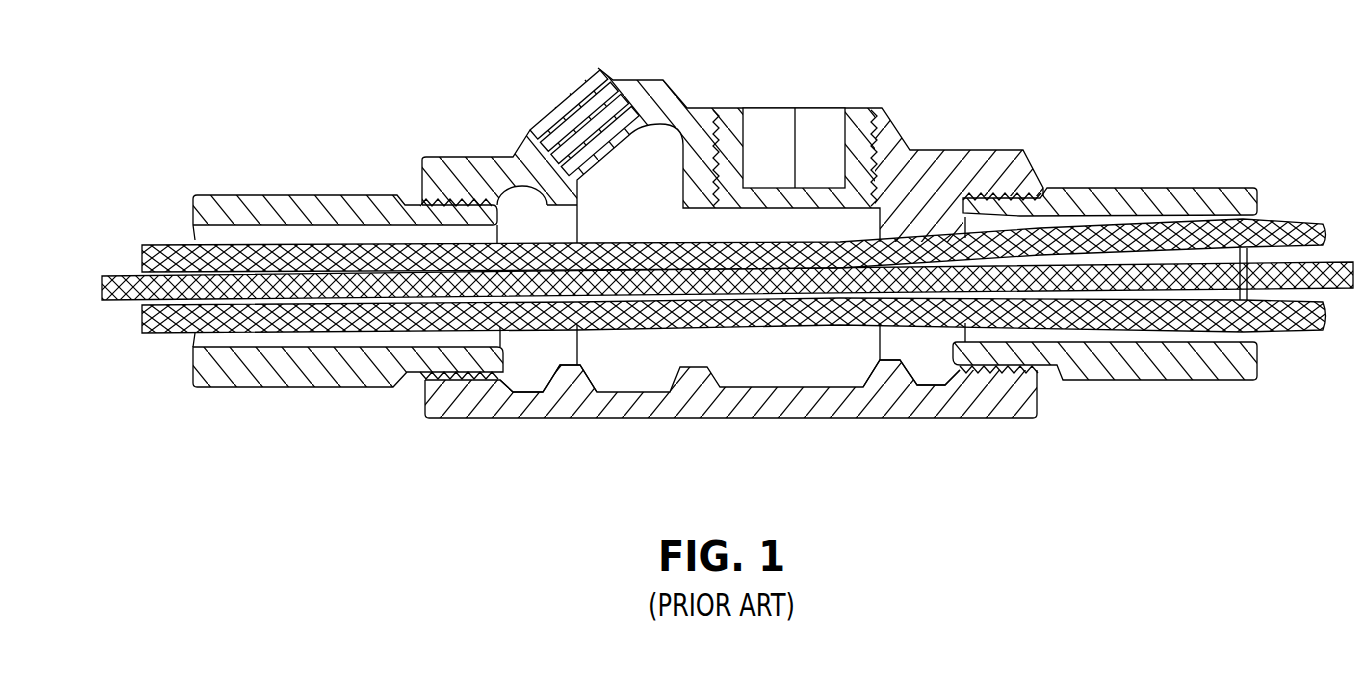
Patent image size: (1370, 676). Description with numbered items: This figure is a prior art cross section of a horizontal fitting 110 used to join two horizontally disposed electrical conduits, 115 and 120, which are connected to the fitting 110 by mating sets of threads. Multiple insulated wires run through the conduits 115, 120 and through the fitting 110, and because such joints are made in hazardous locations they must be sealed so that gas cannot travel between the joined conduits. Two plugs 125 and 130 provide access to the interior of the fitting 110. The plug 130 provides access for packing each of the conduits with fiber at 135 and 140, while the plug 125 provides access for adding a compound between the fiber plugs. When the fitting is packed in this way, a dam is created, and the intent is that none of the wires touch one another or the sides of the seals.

The horizontal fitting 110 is at (641, 80).
The conduit 115 is at (1146, 187).
The conduit 120 is at (302, 193).
The plug 125 is at (563, 95).
The plug 130 is at (813, 107).
The fiber packing location 135 is at (528, 372).
The fiber packing location 140 is at (923, 367).